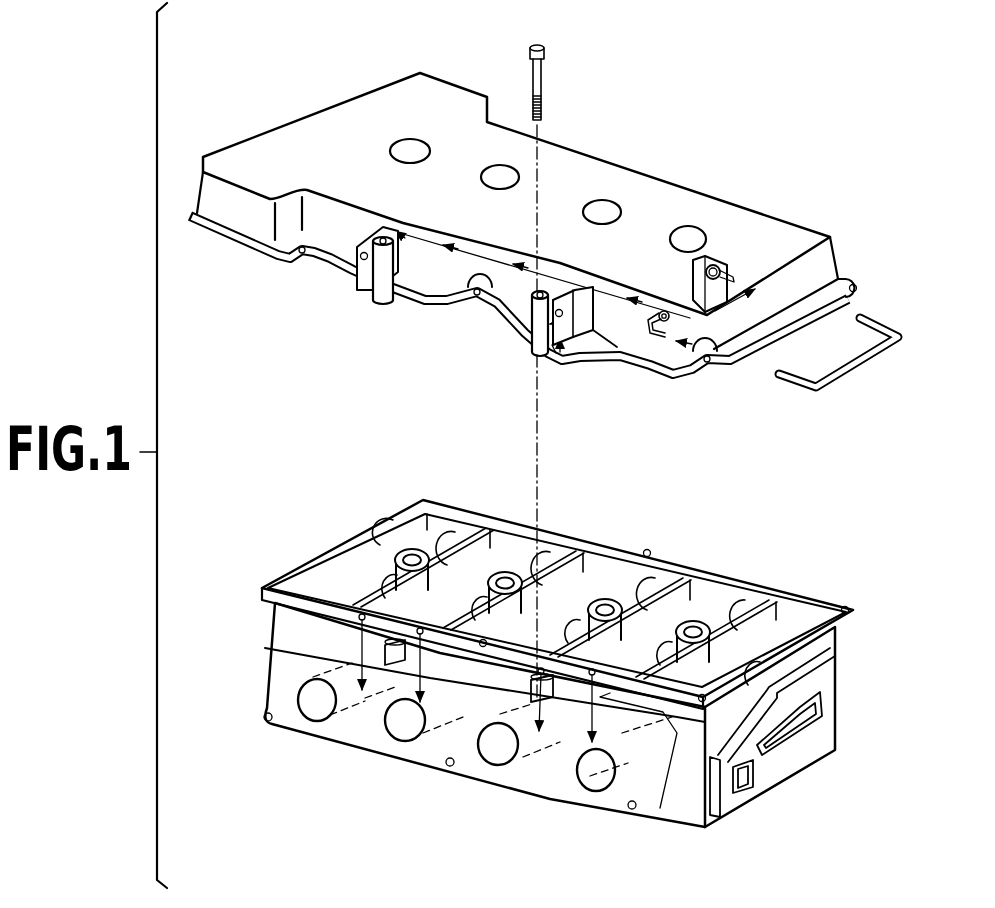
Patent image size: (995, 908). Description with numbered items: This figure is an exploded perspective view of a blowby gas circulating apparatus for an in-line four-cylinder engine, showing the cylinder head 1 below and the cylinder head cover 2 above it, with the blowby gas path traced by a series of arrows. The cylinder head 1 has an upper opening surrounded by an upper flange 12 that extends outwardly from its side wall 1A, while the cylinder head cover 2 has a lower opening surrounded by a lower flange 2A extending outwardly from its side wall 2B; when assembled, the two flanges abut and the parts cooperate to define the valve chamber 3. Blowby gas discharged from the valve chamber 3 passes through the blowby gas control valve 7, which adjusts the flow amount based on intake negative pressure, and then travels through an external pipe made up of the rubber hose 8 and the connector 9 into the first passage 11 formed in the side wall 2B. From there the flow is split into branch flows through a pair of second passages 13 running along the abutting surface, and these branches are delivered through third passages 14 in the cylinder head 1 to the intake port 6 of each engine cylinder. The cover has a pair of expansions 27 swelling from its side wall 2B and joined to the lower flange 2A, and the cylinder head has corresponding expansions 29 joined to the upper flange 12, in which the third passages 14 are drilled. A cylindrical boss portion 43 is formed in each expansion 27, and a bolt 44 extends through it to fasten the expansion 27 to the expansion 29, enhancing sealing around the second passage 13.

The cylinder head 1 is at (380, 513).
The side wall of cylinder head 1A is at (343, 621).
The cylinder head cover 2 is at (327, 100).
The lower flange 2A is at (320, 256).
The side wall of cylinder head cover 2B is at (327, 213).
The valve chamber 3 is at (507, 553).
The intake port 6 is at (402, 730).
The blowby gas control valve 7 is at (733, 270).
The rubber hose 8 is at (850, 372).
The connector 9 is at (656, 328).
The first passage 11 is at (521, 279).
The upper flange 12 is at (277, 588).
The second passage 13 is at (558, 352).
The third passage 14 is at (553, 724).
The expansion of cylinder head cover 27 is at (360, 272).
The expansion of cylinder head 29 is at (378, 640).
The cylindrical boss portion 43 is at (378, 306).
The bolt 44 is at (547, 61).